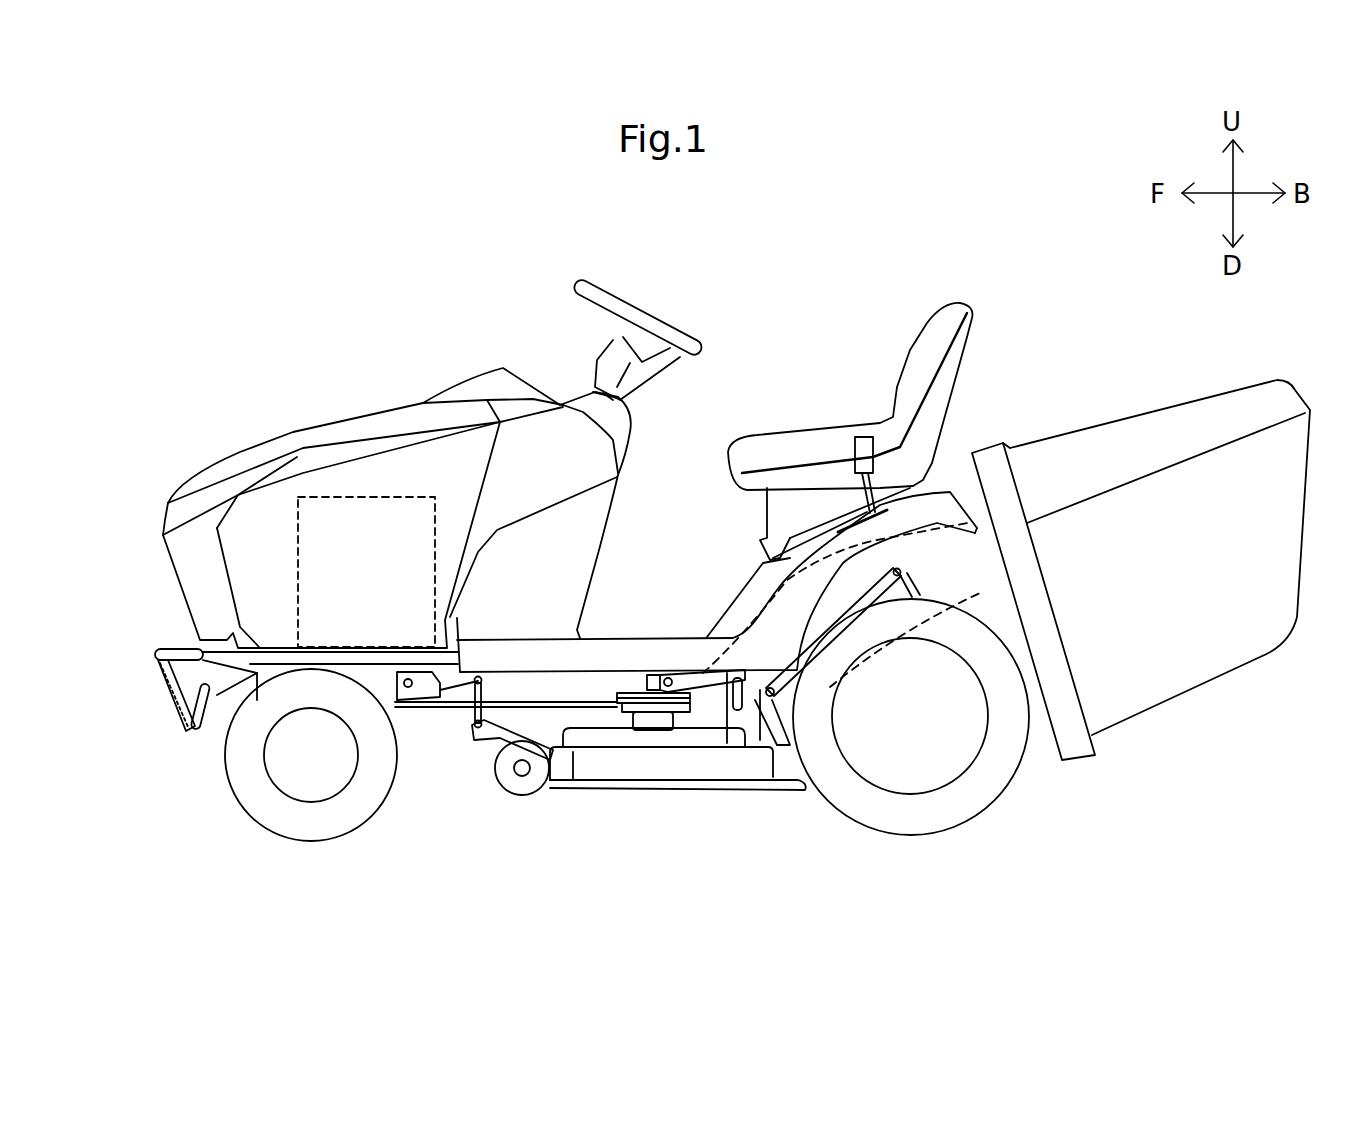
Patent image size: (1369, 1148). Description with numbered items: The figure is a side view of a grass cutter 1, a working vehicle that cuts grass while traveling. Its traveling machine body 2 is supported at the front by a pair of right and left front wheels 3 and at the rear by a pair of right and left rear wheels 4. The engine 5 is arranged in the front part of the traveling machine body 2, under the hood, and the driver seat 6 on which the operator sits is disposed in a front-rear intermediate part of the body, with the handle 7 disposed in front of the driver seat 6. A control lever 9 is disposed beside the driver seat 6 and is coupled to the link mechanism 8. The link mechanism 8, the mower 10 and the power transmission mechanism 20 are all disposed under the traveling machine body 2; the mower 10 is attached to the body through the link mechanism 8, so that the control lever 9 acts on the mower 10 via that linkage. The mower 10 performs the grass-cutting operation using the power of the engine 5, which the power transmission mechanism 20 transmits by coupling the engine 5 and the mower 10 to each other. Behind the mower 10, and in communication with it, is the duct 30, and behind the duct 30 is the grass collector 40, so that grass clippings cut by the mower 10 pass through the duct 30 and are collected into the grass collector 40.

The grass cutter 1 is at (591, 452).
The traveling machine body 2 is at (213, 672).
The front wheels 3 is at (250, 790).
The rear wheels 4 is at (975, 793).
The engine 5 is at (326, 495).
The driver seat 6 is at (920, 360).
The handle 7 is at (627, 305).
The link mechanism 8 is at (490, 735).
The control lever 9 is at (862, 447).
The mower 10 is at (658, 767).
The power transmission mechanism 20 is at (577, 707).
The duct 30 is at (775, 740).
The grass collector 40 is at (1133, 437).